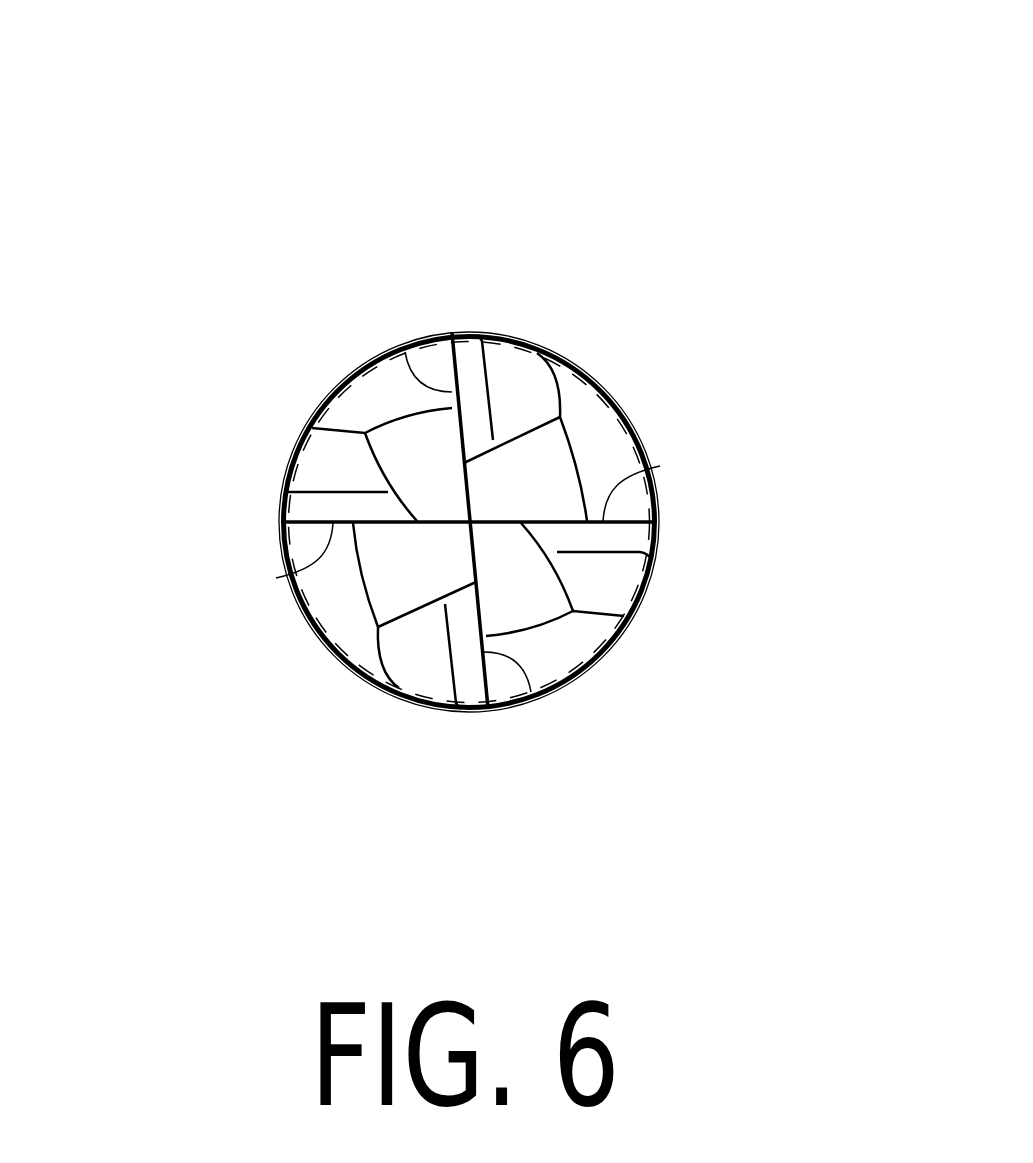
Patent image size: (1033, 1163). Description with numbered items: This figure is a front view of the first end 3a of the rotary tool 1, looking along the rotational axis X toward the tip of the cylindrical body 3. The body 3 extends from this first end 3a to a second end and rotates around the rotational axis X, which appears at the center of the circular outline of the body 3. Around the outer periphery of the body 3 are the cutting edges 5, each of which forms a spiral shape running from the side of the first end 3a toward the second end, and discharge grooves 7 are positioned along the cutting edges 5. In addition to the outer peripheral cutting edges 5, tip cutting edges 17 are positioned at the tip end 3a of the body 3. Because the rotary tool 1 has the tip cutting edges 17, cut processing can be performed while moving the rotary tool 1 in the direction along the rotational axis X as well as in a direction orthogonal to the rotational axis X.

The rotary tool 1 is at (452, 240).
The body 3 is at (618, 558).
The first end 3a is at (462, 519).
The cutting edges 5 is at (300, 443).
The discharge grooves 7 is at (387, 400).
The tip cutting edges 17 is at (405, 352).
The rotational axis X is at (469, 522).